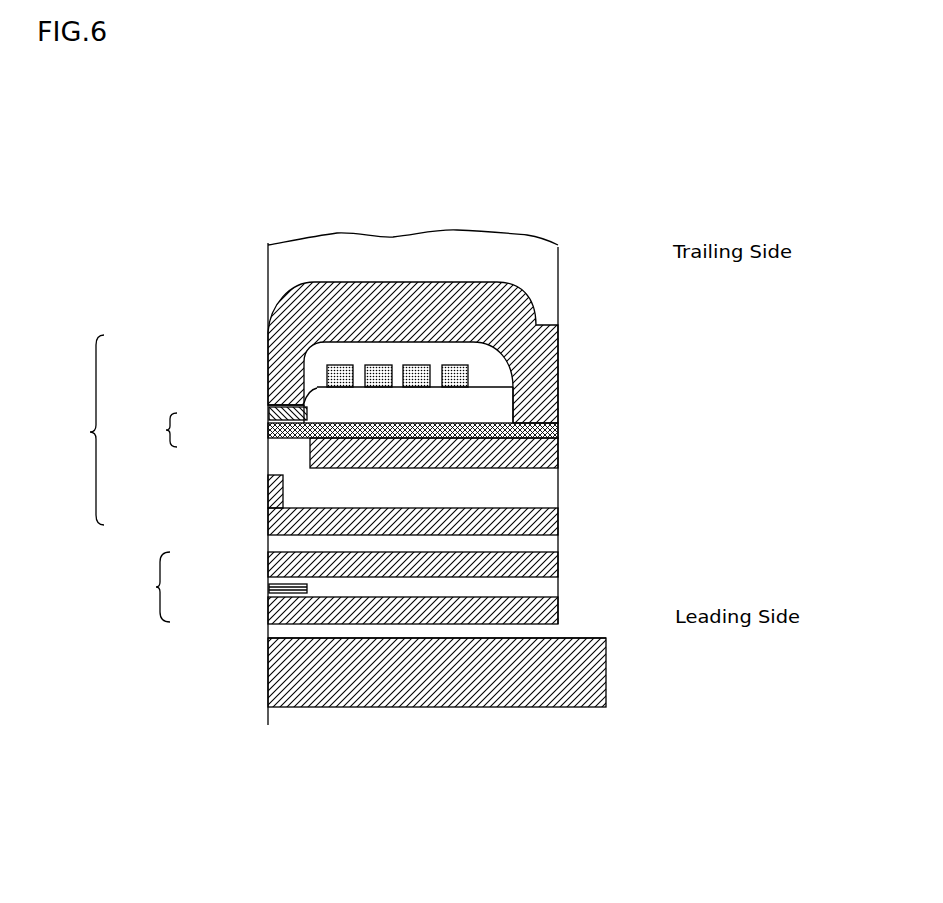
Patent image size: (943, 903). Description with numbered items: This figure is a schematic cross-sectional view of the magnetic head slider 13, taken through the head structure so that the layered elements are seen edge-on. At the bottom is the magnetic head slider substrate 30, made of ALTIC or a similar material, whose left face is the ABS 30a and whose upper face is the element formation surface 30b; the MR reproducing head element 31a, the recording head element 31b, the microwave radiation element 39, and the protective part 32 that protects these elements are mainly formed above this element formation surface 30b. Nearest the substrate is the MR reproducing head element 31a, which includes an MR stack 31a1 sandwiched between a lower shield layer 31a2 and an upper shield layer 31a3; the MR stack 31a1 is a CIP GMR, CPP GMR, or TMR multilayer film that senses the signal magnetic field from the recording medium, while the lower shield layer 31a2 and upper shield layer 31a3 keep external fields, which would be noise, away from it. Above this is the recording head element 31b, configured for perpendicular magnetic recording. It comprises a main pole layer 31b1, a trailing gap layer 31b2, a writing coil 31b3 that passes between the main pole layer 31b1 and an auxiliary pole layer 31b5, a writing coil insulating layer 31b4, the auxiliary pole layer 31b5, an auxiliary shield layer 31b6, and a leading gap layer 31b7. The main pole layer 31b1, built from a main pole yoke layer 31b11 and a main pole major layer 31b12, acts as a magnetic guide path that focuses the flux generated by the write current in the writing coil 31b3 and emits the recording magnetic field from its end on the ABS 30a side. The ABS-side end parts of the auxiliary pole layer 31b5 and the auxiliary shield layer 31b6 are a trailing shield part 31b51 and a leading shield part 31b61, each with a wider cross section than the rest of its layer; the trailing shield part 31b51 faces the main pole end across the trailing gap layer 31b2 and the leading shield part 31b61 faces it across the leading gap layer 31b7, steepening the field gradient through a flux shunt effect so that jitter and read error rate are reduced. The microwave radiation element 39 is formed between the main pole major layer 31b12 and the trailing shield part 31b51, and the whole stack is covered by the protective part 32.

The thin-film magnetic head 13 is at (580, 212).
The magnetic head slider substrate 30 is at (607, 662).
The ABS 30a is at (271, 503).
The element formation surface 30b is at (576, 637).
The MR reproducing head element 31a is at (141, 587).
The MR stack 31a1 is at (268, 588).
The lower shield layer 31a2 is at (268, 610).
The upper shield layer 31a3 is at (268, 562).
The recording head element 31b is at (71, 430).
The main pole layer 31b1 is at (146, 430).
The main pole yoke layer 31b11 is at (310, 442).
The main pole major layer 31b12 is at (268, 431).
The trailing gap layer 31b2 is at (268, 397).
The writing coil 31b3 is at (422, 387).
The writing coil insulating layer 31b4 is at (405, 365).
The auxiliary pole layer 31b5 is at (268, 333).
The trailing shield part 31b51 is at (268, 355).
The auxiliary shield layer 31b6 is at (268, 517).
The leading shield part 31b61 is at (268, 490).
The leading gap layer 31b7 is at (280, 463).
The protective part 32 is at (408, 265).
The microwave radiation element 39 is at (307, 413).